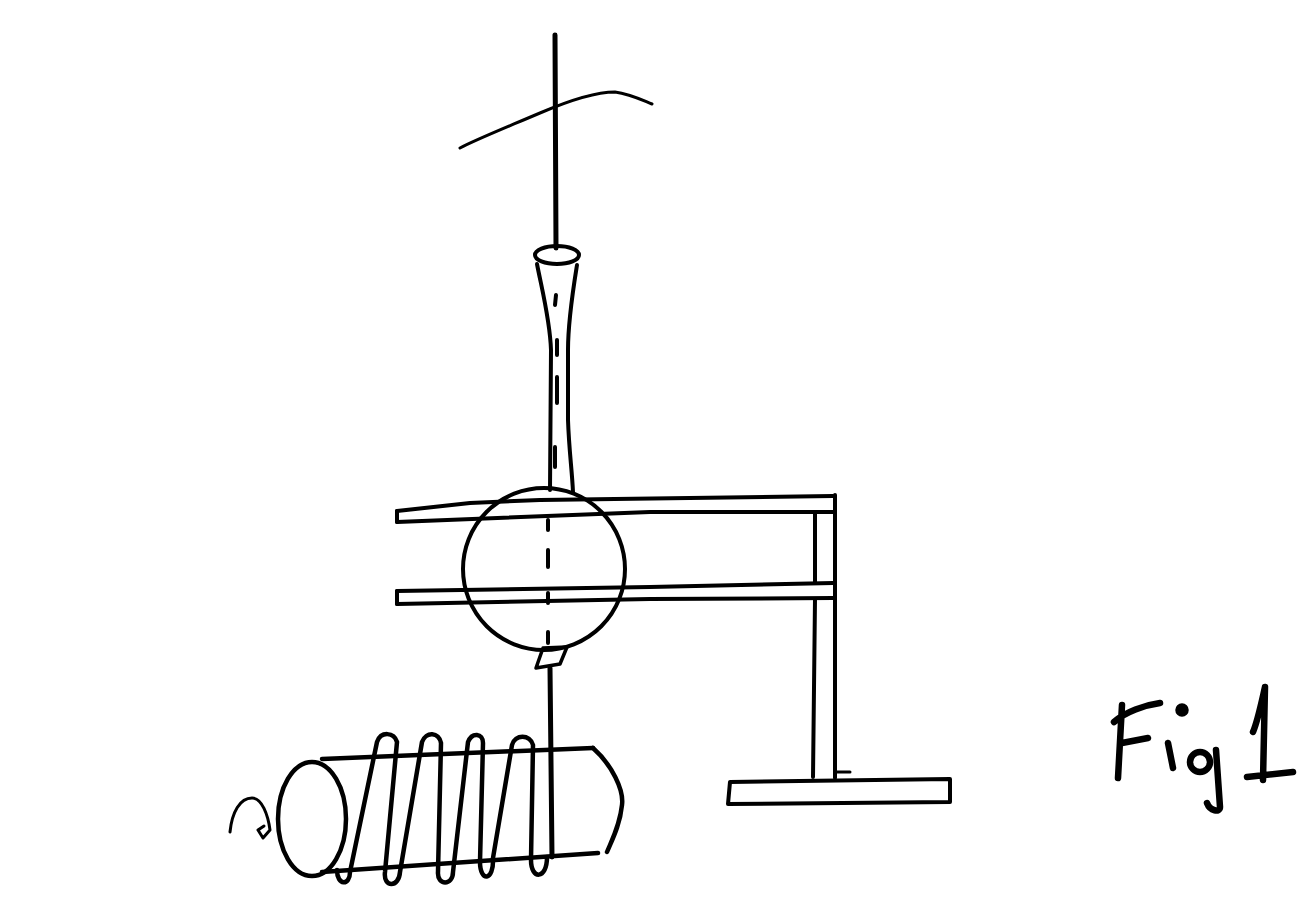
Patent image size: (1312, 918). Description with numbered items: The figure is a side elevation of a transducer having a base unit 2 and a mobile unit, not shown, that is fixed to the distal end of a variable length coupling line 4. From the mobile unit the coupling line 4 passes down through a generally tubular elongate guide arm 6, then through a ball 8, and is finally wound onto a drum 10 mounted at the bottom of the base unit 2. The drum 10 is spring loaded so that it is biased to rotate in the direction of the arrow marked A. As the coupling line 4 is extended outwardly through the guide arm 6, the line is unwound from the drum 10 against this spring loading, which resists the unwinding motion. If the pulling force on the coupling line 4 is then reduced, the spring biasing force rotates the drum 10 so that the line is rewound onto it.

The base unit 2 is at (835, 661).
The variable length coupling line 4 is at (557, 93).
The generally tubular elongate guide arm 6 is at (572, 318).
The ball 8 is at (600, 516).
The drum 10 is at (620, 832).